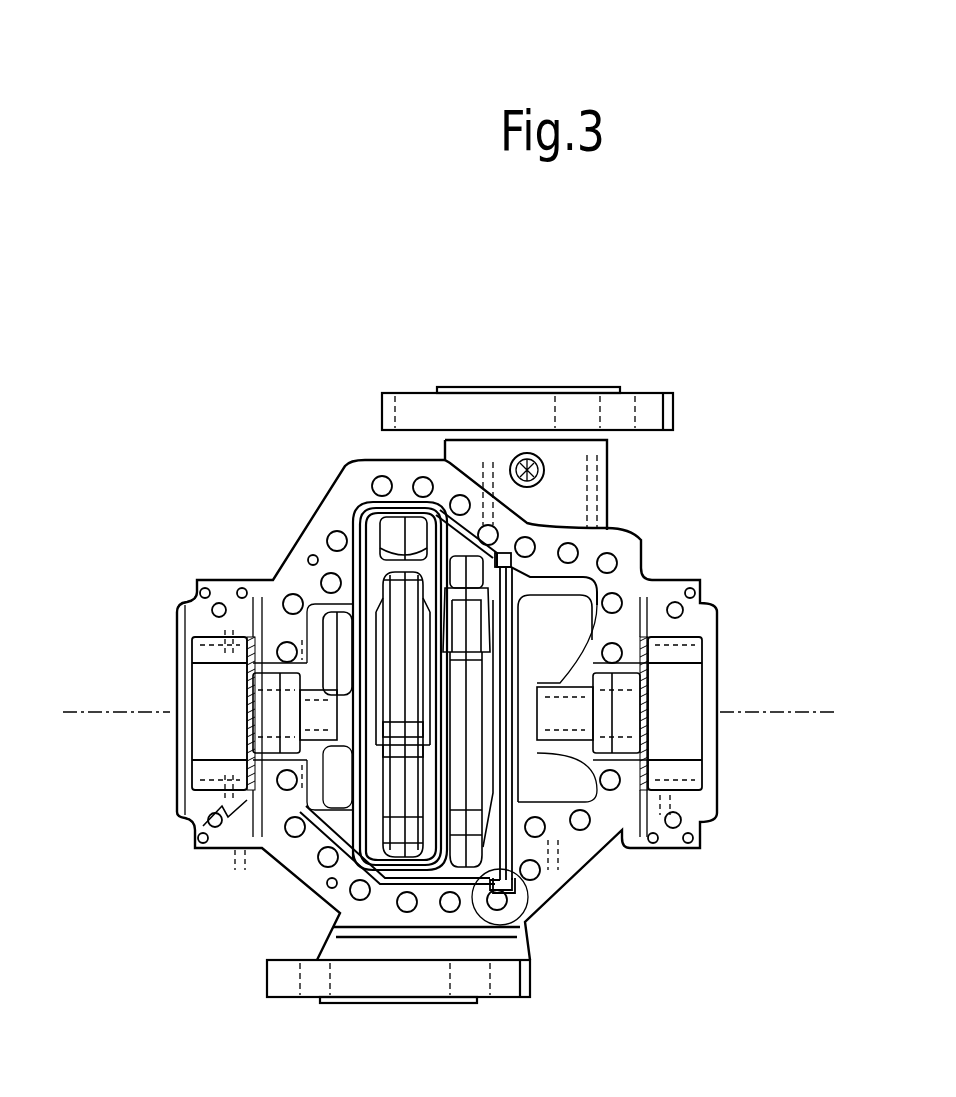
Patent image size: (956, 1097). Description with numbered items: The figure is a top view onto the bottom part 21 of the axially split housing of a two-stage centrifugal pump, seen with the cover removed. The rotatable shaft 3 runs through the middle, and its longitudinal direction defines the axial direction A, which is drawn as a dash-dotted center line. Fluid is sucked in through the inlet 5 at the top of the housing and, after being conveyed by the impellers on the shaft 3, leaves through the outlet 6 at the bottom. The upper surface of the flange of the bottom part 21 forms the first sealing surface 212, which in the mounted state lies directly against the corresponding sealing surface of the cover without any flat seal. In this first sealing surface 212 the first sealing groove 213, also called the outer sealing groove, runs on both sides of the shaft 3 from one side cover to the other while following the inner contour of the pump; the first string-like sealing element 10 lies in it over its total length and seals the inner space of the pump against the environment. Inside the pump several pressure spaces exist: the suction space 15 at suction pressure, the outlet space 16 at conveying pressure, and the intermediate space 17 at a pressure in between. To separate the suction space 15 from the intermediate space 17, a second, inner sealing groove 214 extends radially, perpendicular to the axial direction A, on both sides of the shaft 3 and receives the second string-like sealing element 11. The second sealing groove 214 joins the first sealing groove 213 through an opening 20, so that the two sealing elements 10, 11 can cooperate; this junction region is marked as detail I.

The shaft 3 is at (317, 712).
The inlet 5 is at (643, 407).
The outlet 6 is at (528, 997).
The first string-like sealing element 10 is at (352, 530).
The second string-like sealing element 11 is at (510, 588).
The suction space 15 is at (563, 617).
The outlet space 16 is at (393, 530).
The intermediate space 17 is at (457, 572).
The opening 20 is at (507, 552).
The bottom part 21 is at (237, 580).
The first sealing surface 212 is at (190, 847).
The first sealing groove 213 is at (298, 682).
The second sealing groove 214 is at (545, 749).
The axial direction A is at (83, 713).
The detail I is at (514, 934).